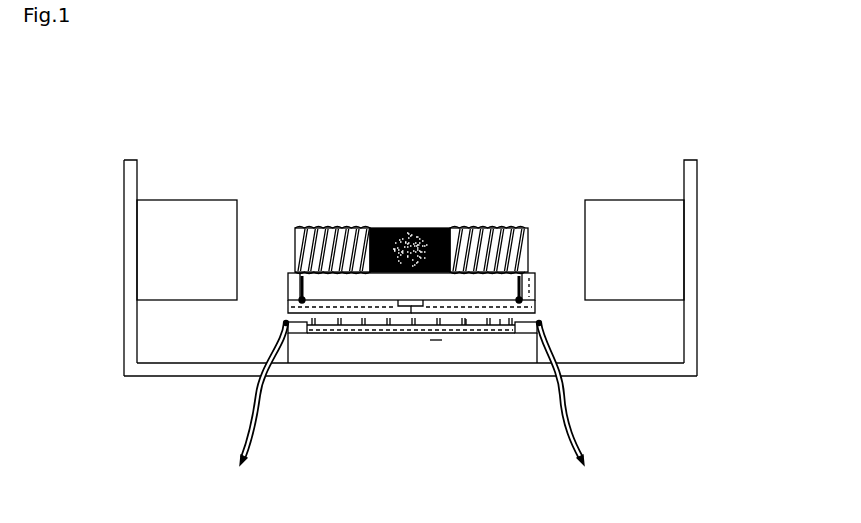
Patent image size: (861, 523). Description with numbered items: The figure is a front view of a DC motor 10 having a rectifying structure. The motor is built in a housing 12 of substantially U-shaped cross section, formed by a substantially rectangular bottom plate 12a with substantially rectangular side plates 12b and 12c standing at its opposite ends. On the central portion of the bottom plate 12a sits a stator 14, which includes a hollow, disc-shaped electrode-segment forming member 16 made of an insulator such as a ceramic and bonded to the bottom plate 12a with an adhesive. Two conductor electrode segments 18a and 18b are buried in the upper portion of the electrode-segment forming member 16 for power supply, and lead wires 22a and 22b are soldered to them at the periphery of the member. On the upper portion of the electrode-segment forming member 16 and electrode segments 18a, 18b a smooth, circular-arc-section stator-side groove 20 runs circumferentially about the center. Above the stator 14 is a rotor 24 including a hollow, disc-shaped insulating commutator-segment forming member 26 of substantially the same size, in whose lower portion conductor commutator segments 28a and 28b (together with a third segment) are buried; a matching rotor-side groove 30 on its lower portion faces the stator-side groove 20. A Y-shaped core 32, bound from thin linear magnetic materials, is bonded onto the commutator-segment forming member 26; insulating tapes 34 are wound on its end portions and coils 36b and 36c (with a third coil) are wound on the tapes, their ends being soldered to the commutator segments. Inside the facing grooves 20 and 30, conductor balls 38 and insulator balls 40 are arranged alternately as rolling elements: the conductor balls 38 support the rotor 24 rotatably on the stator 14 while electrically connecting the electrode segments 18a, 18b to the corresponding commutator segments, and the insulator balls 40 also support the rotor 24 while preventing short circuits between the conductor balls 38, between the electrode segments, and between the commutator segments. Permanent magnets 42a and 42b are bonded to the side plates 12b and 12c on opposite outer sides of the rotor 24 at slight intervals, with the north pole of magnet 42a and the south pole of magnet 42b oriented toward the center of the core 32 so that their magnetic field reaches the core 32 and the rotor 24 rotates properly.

The DC motor 10 is at (173, 100).
The housing 12 is at (699, 356).
The bottom plate 12a is at (660, 372).
The side plate 12b is at (124, 182).
The side plate 12c is at (693, 180).
The stator 14 is at (344, 349).
The electrode-segment forming member 16 is at (389, 353).
The electrode segment 18a is at (286, 328).
The electrode segment 18b is at (546, 327).
The stator-side groove 20 is at (436, 328).
The lead wire 22a is at (258, 413).
The lead wire 22b is at (569, 412).
The rotor 24 is at (284, 294).
The commutator-segment forming member 26 is at (288, 277).
The commutator segment 28a is at (538, 307).
The commutator segment 28b is at (287, 307).
The rotor-side groove 30 is at (529, 298).
The core 32 is at (381, 230).
The insulating tape 34 is at (307, 240).
The coil 36b is at (330, 238).
The coil 36c is at (495, 238).
The conductor ball 38 is at (469, 322).
The insulator ball 40 is at (502, 322).
The permanent magnet 42a is at (148, 277).
The permanent magnet 42b is at (672, 275).